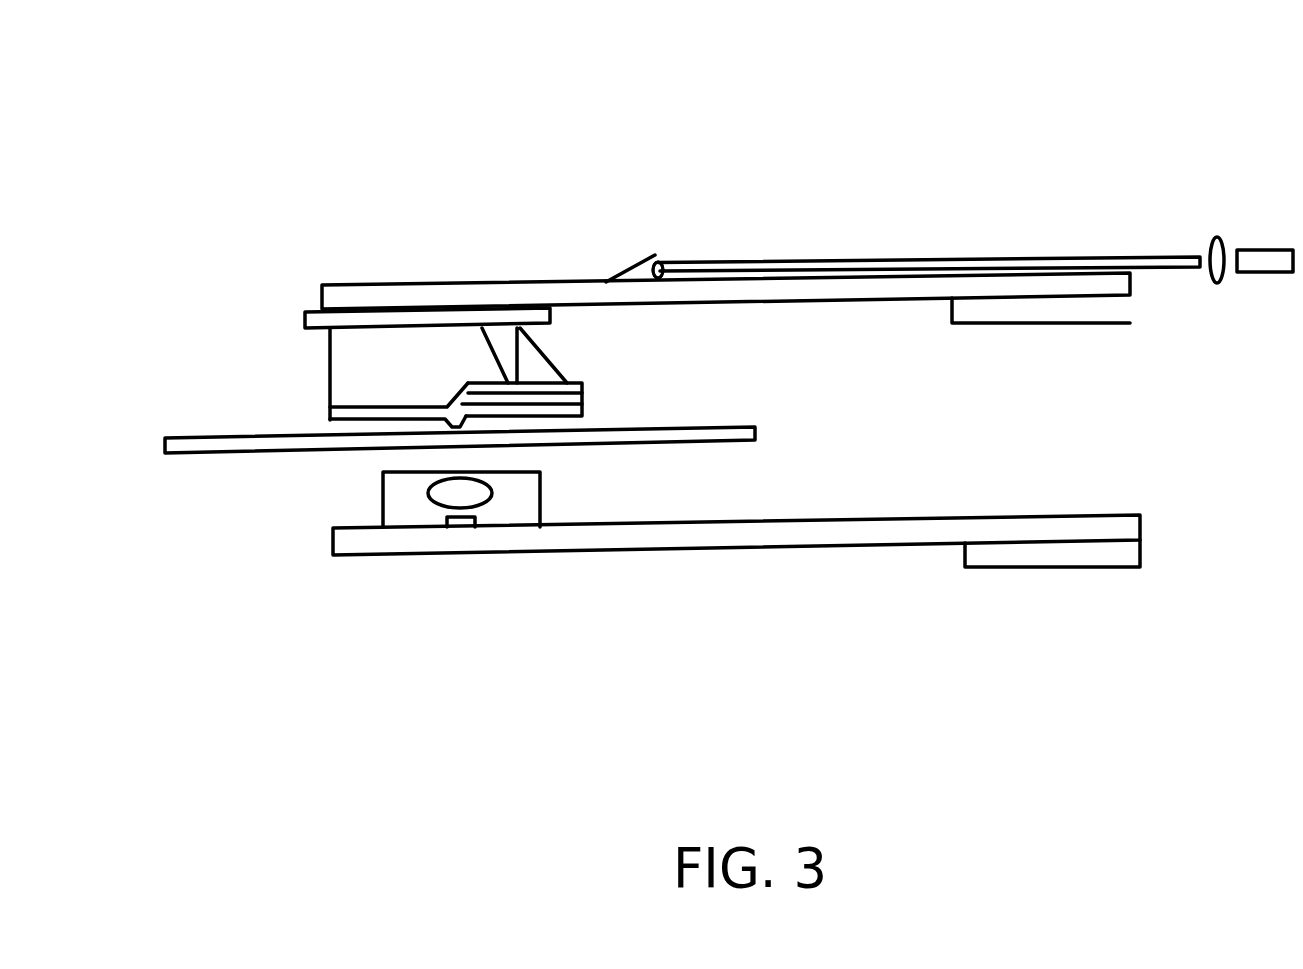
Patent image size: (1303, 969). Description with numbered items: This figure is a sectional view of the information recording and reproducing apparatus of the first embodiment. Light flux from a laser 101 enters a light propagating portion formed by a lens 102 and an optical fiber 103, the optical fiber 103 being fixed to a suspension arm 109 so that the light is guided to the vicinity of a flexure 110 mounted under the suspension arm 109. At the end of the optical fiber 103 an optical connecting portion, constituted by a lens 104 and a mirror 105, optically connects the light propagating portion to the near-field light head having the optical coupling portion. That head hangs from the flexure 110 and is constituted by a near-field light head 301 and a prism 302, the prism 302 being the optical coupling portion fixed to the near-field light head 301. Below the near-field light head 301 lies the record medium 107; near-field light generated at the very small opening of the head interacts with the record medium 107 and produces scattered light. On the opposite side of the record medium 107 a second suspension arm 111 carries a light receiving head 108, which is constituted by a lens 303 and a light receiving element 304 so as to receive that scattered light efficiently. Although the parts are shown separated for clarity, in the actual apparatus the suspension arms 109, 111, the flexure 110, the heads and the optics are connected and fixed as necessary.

The laser 101 is at (1270, 270).
The lens 102 is at (1215, 238).
The optical fiber 103 is at (912, 260).
The lens 104 is at (663, 270).
The mirror 105 is at (627, 270).
The record medium 107 is at (268, 453).
The light receiving head 108 is at (542, 495).
The suspension arm 109 is at (860, 302).
The flexure 110 is at (317, 310).
The suspension arm 111 is at (865, 547).
The near-field light head 301 is at (467, 377).
The prism 302 is at (543, 350).
The lens 303 is at (427, 495).
The light receiving element 304 is at (457, 527).